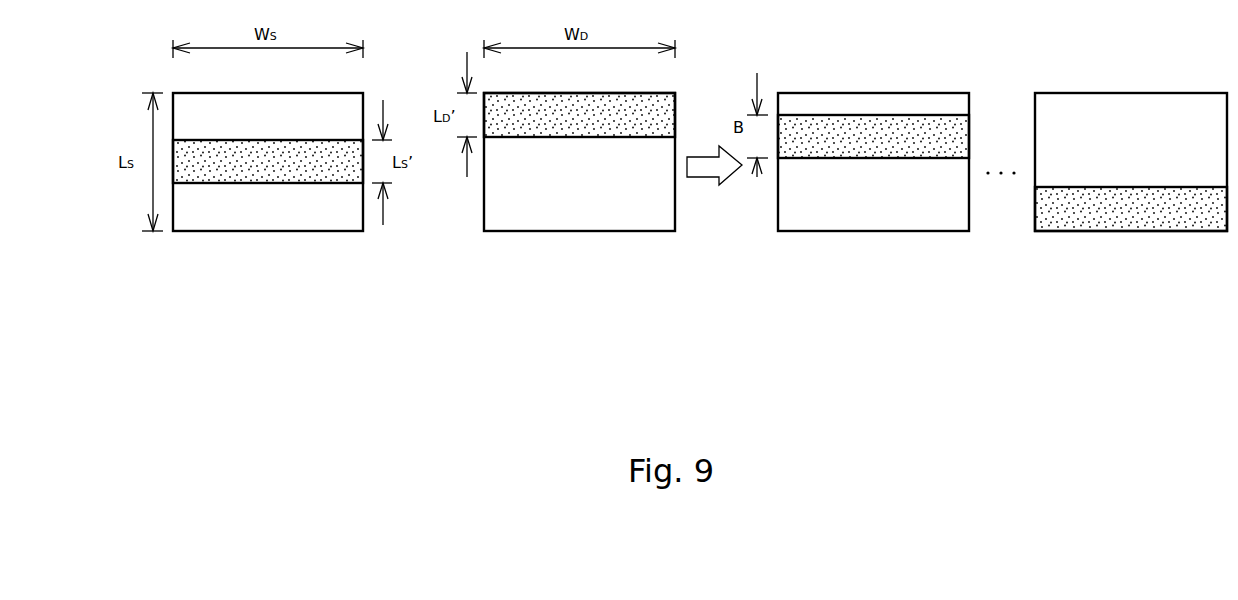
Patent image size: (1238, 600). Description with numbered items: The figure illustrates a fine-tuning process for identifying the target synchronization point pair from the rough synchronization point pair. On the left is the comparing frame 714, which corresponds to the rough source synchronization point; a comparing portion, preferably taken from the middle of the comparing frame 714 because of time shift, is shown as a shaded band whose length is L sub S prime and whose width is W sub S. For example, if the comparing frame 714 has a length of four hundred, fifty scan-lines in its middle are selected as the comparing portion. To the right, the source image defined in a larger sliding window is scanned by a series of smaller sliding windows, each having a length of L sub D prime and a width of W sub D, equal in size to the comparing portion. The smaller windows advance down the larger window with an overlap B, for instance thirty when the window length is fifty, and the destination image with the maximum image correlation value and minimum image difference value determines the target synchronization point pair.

The comparing frame 714 is at (313, 92).